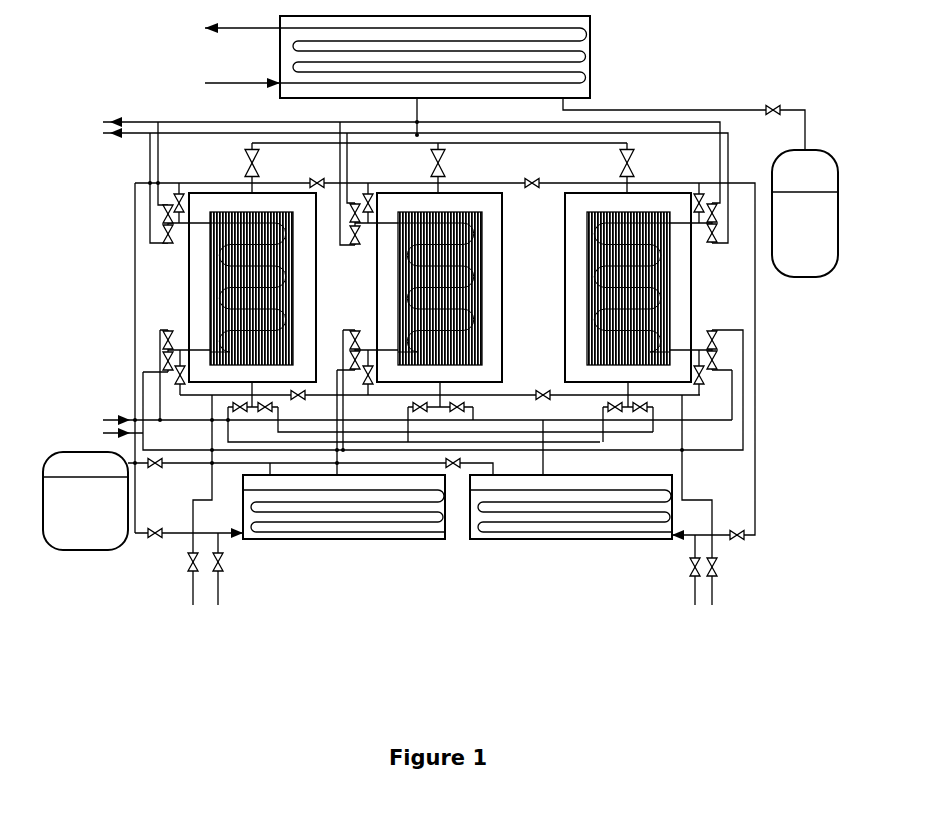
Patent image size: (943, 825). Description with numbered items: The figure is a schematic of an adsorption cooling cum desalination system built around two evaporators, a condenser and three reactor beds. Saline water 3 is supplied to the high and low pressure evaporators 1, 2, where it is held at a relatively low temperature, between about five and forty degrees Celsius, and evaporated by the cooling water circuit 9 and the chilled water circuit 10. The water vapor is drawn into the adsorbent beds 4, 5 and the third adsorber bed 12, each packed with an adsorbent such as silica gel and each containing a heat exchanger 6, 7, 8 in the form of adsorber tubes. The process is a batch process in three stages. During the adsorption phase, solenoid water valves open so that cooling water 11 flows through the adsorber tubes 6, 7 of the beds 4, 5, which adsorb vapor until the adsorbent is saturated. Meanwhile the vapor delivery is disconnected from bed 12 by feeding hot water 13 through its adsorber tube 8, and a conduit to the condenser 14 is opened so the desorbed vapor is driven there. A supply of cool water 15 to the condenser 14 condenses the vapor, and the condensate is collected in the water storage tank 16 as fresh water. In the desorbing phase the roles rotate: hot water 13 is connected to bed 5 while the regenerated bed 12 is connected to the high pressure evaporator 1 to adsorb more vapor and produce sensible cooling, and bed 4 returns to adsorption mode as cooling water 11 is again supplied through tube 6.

The high pressure evaporator 1 is at (352, 540).
The low pressure evaporator 2 is at (552, 538).
The saline water supply 3 is at (85, 501).
The adsorbent bed 4 is at (310, 243).
The adsorbent bed 5 is at (502, 288).
The heat exchanger 6 is at (212, 308).
The heat exchanger 7 is at (448, 272).
The heat exchanger 8 is at (605, 292).
The cooling water circuit 9 is at (218, 605).
The chilled water circuit 10 is at (713, 605).
The cooling water 11 is at (113, 127).
The adsorber bed 12 is at (688, 258).
The hot water supply 13 is at (113, 418).
The condenser 14 is at (448, 57).
The cool water supply 15 is at (220, 76).
The water storage tank 16 is at (805, 213).